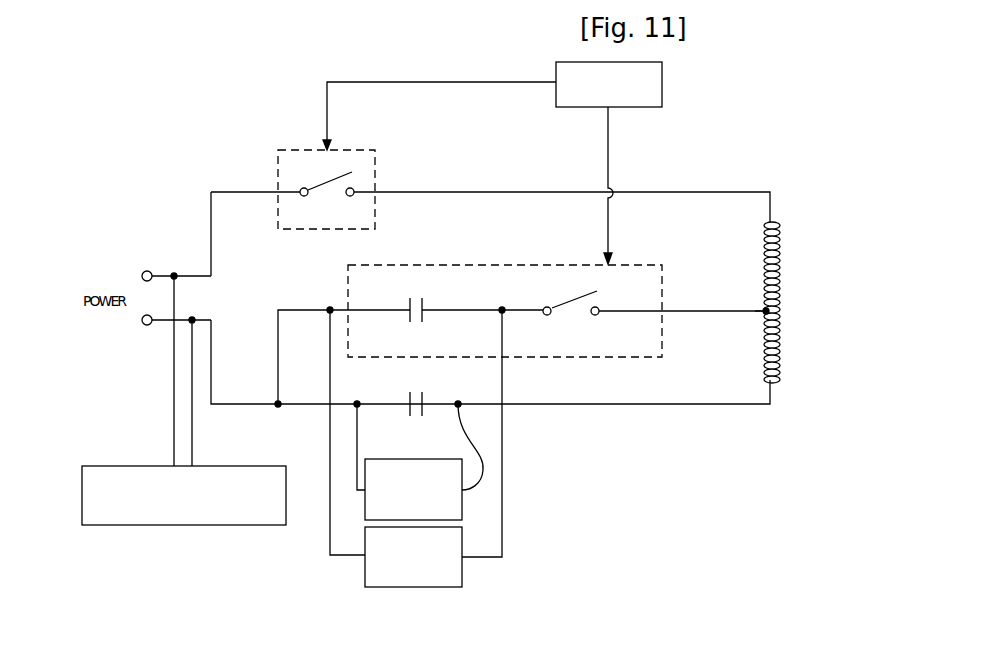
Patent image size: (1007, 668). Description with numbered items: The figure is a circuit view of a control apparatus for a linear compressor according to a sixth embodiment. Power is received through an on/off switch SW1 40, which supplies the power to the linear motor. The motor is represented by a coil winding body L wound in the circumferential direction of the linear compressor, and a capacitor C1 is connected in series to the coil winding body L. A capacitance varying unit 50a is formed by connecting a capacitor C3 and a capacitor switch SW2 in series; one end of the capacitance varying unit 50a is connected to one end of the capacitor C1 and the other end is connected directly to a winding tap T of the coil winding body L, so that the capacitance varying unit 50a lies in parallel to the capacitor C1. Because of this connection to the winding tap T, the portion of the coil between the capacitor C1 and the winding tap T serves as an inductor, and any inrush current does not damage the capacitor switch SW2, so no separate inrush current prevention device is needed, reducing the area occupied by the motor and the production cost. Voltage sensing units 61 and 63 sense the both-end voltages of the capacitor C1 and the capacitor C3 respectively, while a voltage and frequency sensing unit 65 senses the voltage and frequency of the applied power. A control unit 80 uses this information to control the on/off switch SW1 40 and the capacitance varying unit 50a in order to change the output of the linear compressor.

The on/off switch 40 is at (307, 165).
The capacitance varying unit 50a is at (469, 309).
The voltage sensing unit 61 is at (462, 497).
The voltage sensing unit 63 is at (462, 545).
The voltage and frequency sensing unit 65 is at (82, 495).
The control unit 80 is at (662, 82).
The coil winding body L is at (792, 252).
The winding tap T is at (764, 313).
The capacitor C1 is at (415, 415).
The capacitor C3 is at (415, 299).
The on/off switch SW1 is at (327, 195).
The capacitor switch SW2 is at (571, 315).